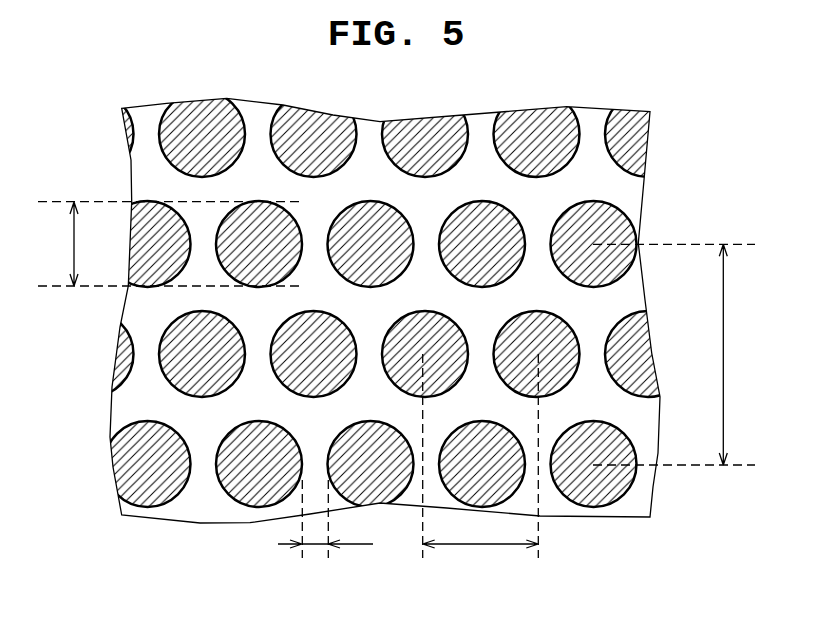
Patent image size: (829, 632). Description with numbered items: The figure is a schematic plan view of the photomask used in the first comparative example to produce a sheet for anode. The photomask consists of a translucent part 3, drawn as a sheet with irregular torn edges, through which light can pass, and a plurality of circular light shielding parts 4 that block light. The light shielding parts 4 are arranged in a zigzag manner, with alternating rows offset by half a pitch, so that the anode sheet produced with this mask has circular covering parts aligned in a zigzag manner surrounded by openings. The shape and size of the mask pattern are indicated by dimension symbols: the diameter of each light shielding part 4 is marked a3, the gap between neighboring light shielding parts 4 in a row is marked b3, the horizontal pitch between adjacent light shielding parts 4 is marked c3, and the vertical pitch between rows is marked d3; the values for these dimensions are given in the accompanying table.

The translucent part 3 is at (165, 411).
The light shielding part 4 is at (183, 353).
The light shielding part diameter a3 is at (165, 244).
The gap between light shielding parts b3 is at (325, 539).
The light shielding part pitch c3 is at (481, 467).
The row pitch of light shielding parts d3 is at (681, 354).